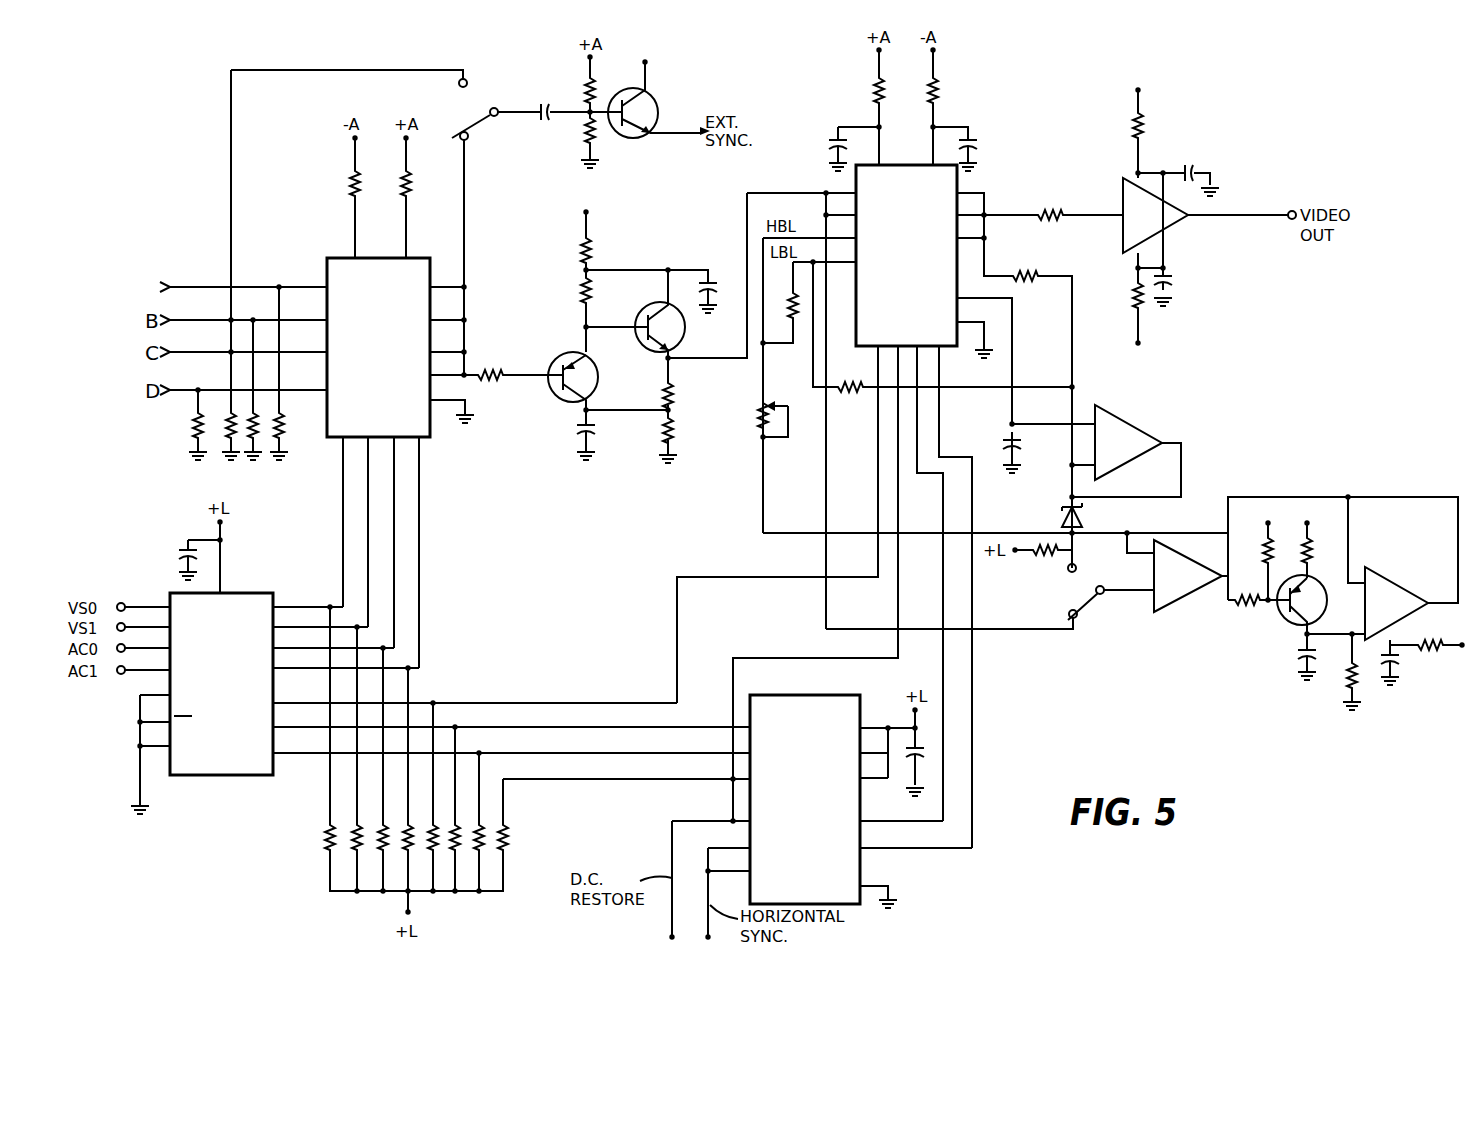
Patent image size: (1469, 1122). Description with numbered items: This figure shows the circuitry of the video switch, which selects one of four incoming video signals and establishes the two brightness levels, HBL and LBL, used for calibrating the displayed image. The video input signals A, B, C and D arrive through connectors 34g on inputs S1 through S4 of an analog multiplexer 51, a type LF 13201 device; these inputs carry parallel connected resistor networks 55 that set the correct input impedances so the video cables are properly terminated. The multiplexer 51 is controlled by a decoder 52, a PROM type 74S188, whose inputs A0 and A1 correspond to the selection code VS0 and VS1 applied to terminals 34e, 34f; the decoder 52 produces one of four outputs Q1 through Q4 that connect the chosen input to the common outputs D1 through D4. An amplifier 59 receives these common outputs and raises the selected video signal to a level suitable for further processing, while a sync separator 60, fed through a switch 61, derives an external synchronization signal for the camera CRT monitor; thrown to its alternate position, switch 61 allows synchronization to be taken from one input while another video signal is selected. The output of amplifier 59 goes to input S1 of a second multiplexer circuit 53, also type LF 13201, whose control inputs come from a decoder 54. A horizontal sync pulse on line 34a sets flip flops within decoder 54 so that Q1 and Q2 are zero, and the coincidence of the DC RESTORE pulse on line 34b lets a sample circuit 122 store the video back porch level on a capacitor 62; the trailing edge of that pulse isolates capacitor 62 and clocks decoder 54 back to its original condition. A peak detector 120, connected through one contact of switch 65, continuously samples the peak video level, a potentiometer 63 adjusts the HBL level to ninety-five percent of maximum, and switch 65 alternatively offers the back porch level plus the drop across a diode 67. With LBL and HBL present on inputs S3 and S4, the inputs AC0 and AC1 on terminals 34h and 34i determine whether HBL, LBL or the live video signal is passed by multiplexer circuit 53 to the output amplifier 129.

The horizontal sync line 34a is at (708, 938).
The DC RESTORE line 34b is at (672, 938).
The VS terminal 34e is at (120, 602).
The VS terminal 34f is at (118, 622).
The connectors 34g is at (167, 286).
The AC0 terminal 34h is at (118, 653).
The AC1 terminal 34i is at (118, 675).
The analog multiplexer 51 is at (388, 336).
The decoder 52 is at (231, 686).
The multiplexer circuit 53 is at (919, 238).
The decoder 54 is at (821, 806).
The resistor networks 55 is at (266, 468).
The amplifier 59 is at (641, 391).
The sync separator 60 is at (648, 168).
The switch 61 is at (472, 126).
The capacitor 62 is at (1010, 446).
The potentiometer 63 is at (762, 405).
The switch 65 is at (1081, 600).
The diode 67 is at (1079, 511).
The peak detector 120 is at (1263, 651).
The sample circuit 122 is at (1188, 425).
The amplifier 129 is at (1162, 227).